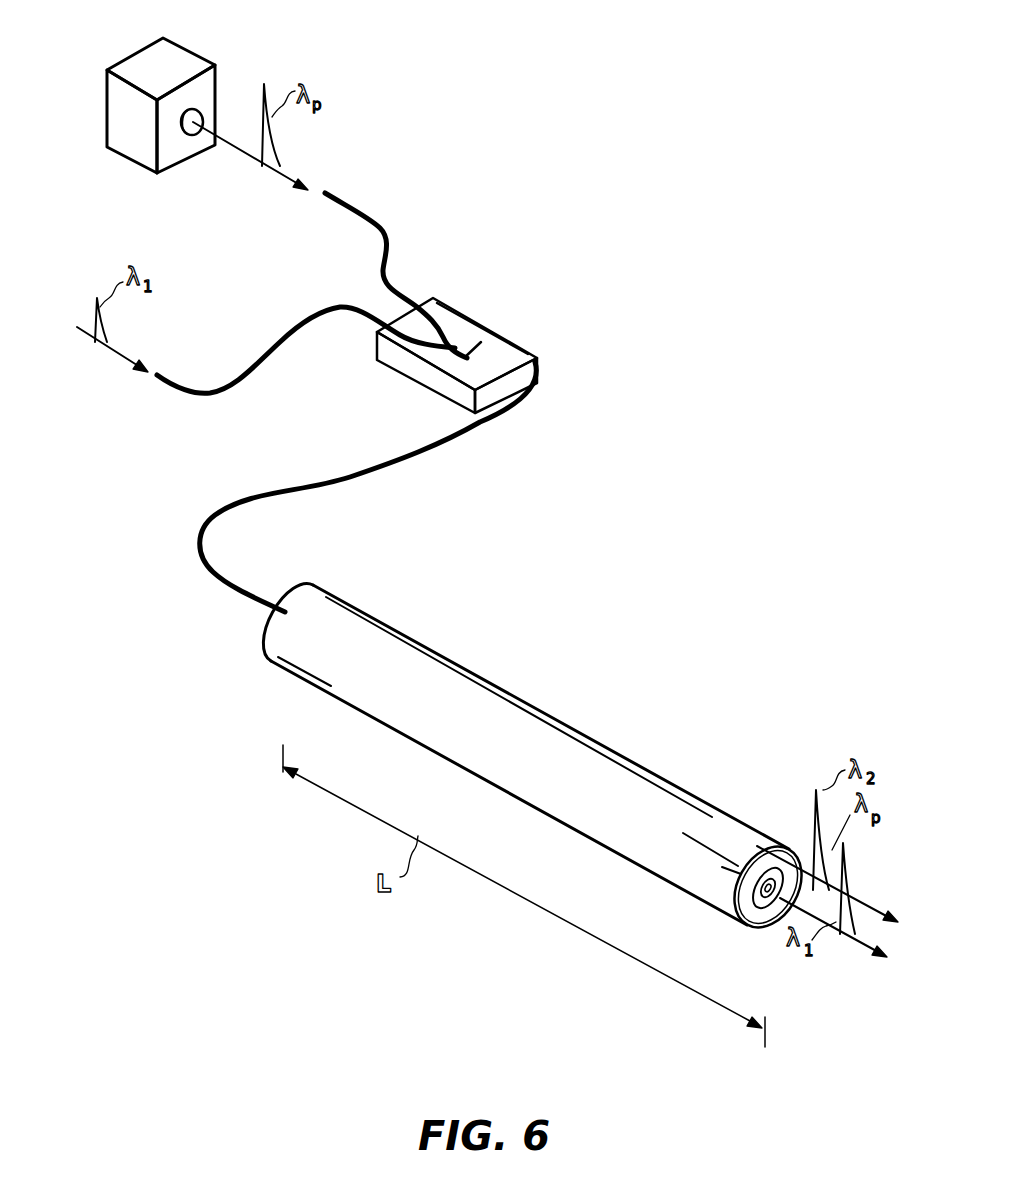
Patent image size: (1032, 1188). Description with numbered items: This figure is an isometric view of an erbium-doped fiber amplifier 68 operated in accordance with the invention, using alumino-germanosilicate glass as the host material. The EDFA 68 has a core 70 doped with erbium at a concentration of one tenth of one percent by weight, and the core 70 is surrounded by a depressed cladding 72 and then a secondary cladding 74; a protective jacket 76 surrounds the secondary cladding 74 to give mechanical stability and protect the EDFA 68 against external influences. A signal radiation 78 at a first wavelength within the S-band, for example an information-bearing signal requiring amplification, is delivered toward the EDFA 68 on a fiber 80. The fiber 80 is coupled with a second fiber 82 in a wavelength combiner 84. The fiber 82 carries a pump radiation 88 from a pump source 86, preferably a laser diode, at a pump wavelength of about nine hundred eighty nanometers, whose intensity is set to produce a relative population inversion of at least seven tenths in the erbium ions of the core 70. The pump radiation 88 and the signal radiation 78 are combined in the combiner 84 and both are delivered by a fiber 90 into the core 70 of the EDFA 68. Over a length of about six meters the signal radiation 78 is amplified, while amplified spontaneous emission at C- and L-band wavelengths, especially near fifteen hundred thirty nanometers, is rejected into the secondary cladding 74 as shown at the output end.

The Er-doped fiber amplifier 68 is at (668, 779).
The core 70 is at (753, 892).
The depressed cladding 72 is at (758, 843).
The secondary cladding 74 is at (740, 926).
The protective jacket 76 is at (756, 930).
The signal radiation 78 is at (113, 357).
The fiber 80 is at (263, 360).
The fiber 82 is at (367, 210).
The wavelength combiner 84 is at (470, 307).
The pump source 86 is at (200, 50).
The pump radiation 88 is at (251, 157).
The fiber 90 is at (410, 457).